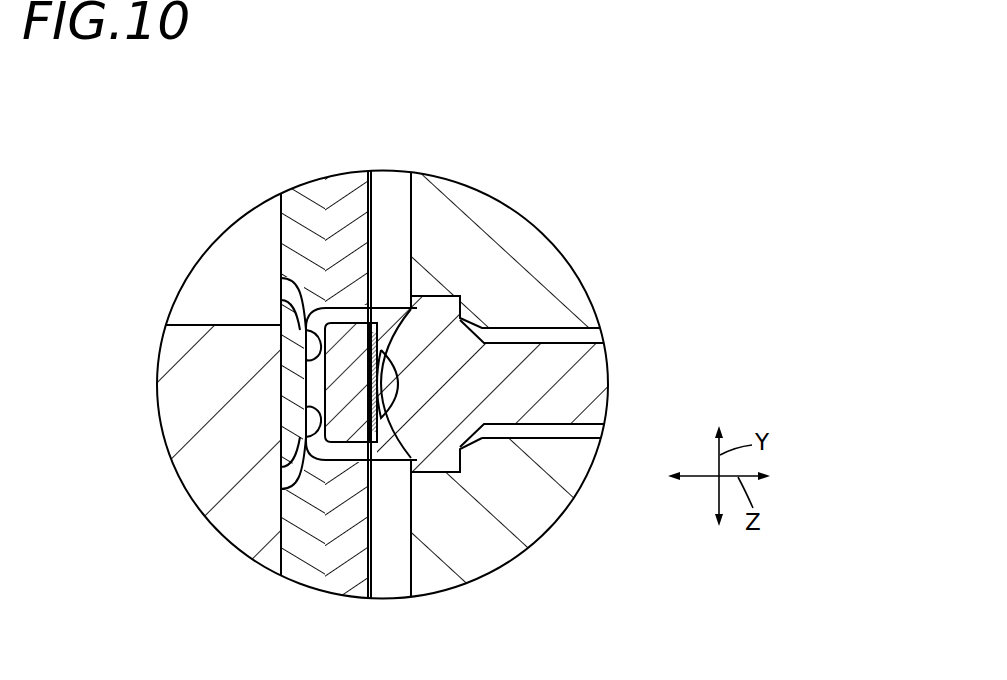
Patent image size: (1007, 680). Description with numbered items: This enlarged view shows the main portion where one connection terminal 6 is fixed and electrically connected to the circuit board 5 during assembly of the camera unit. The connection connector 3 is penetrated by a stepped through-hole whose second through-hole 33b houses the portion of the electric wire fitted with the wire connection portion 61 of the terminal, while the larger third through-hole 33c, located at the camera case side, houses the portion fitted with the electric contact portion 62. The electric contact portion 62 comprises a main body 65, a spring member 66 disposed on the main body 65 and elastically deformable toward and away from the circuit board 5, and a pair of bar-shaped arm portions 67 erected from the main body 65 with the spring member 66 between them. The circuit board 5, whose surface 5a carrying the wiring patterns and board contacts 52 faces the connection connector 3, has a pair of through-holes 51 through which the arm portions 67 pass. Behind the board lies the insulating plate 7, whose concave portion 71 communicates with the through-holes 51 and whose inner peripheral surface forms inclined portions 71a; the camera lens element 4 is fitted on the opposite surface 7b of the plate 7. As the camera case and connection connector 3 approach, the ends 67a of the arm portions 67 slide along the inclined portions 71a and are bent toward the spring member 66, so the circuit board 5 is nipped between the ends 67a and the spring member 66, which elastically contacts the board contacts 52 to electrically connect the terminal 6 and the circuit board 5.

The connection connector 3 is at (580, 300).
The camera lens element 4 is at (200, 448).
The circuit board 5 is at (337, 190).
The surface 5a is at (371, 300).
The connection terminal 6 is at (523, 97).
The insulating plate 7 is at (302, 227).
The surface 7b is at (279, 222).
The second through-hole 33b is at (550, 437).
The third through-hole 33c is at (445, 480).
The through-hole 51 is at (333, 188).
The board contact 52 is at (368, 423).
The wire connection portion 61 is at (533, 358).
The electric contact portion 62 is at (482, 131).
The main body 65 is at (473, 317).
The spring member 66 is at (413, 297).
The arm portion 67 is at (374, 307).
The end 67a is at (306, 338).
The concave portion 71 is at (308, 390).
The inclined portion 71a is at (306, 310).